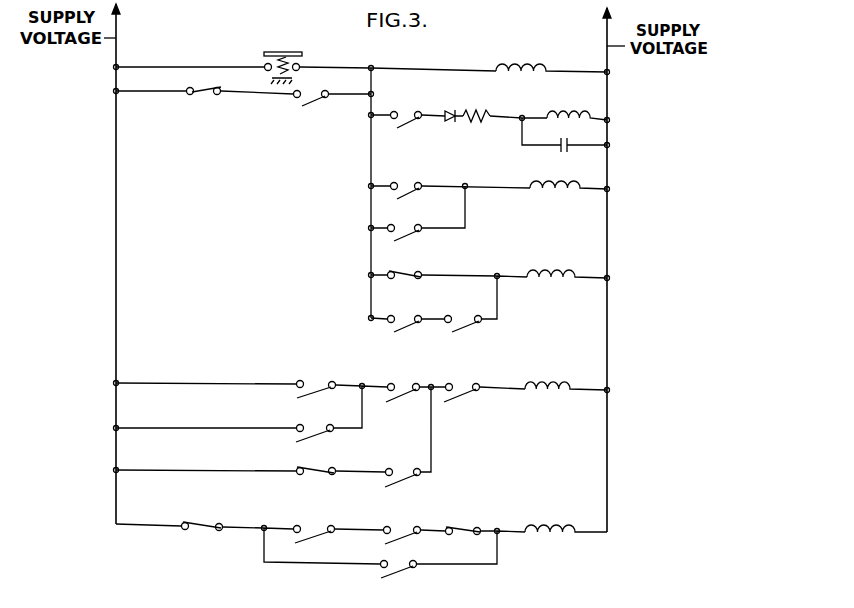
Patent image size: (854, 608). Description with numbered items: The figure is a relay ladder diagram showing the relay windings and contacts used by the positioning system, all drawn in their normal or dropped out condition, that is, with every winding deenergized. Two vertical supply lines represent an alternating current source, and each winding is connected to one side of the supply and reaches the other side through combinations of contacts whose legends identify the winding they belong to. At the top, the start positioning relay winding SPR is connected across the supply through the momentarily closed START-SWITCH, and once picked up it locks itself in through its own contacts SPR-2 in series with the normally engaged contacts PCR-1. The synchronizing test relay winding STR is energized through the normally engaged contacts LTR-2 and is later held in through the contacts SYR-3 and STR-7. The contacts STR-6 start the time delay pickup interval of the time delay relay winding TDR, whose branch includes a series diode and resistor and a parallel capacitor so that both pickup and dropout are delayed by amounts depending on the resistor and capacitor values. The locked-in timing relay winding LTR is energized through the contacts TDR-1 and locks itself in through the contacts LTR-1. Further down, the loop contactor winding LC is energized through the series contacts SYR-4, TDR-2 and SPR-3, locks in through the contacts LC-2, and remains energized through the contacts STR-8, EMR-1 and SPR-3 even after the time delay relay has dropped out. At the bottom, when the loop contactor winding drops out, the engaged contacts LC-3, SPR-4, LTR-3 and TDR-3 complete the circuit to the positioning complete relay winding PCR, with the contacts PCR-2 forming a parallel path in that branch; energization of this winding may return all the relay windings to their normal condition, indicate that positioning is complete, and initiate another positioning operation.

The start switch START-SWITCH is at (282, 34).
The start positioning relay winding SPR is at (607, 73).
The time delay relay winding TDR is at (607, 121).
The locked-in timing relay winding LTR is at (607, 190).
The synchronizing test relay winding STR is at (616, 271).
The loop contactor winding LC is at (607, 390).
The positioning complete relay winding PCR is at (607, 532).
The normally engaged contacts PCR-1 is at (203, 90).
The contacts SPR-2 is at (315, 101).
The contacts STR-6 is at (409, 122).
The contacts TDR-1 is at (408, 193).
The contacts LTR-1 is at (406, 235).
The normally engaged contacts LTR-2 is at (404, 277).
The contacts SYR-3 is at (406, 326).
The contacts STR-7 is at (464, 326).
The contacts SYR-4 is at (316, 392).
The contacts LC-2 is at (316, 436).
The contacts TDR-2 is at (404, 394).
The contacts SPR-3 is at (462, 394).
The contacts STR-8 is at (316, 472).
The contacts EMR-1 is at (400, 481).
The contacts LC-3 is at (203, 526).
The contacts SPR-4 is at (310, 538).
The contacts LTR-3 is at (400, 539).
The contacts TDR-3 is at (462, 527).
The contacts PCR-2 is at (397, 573).